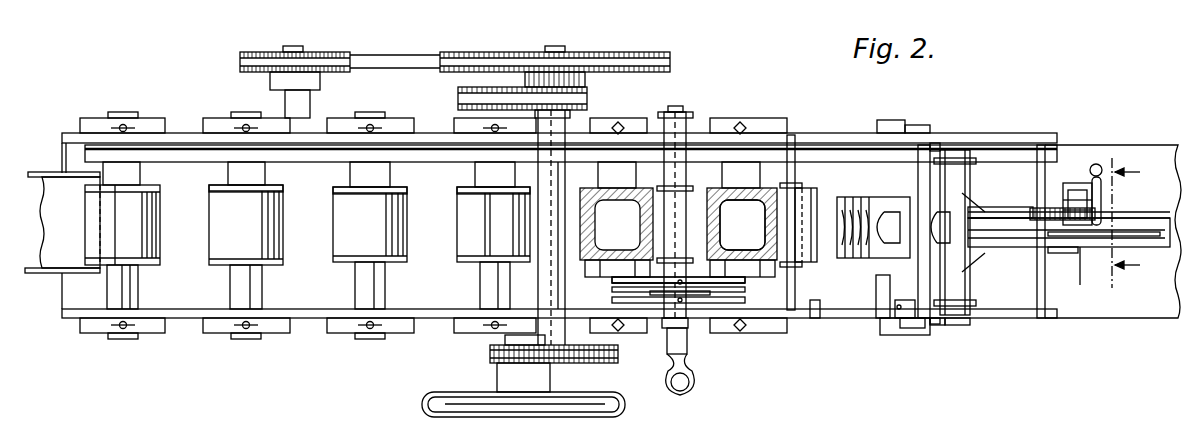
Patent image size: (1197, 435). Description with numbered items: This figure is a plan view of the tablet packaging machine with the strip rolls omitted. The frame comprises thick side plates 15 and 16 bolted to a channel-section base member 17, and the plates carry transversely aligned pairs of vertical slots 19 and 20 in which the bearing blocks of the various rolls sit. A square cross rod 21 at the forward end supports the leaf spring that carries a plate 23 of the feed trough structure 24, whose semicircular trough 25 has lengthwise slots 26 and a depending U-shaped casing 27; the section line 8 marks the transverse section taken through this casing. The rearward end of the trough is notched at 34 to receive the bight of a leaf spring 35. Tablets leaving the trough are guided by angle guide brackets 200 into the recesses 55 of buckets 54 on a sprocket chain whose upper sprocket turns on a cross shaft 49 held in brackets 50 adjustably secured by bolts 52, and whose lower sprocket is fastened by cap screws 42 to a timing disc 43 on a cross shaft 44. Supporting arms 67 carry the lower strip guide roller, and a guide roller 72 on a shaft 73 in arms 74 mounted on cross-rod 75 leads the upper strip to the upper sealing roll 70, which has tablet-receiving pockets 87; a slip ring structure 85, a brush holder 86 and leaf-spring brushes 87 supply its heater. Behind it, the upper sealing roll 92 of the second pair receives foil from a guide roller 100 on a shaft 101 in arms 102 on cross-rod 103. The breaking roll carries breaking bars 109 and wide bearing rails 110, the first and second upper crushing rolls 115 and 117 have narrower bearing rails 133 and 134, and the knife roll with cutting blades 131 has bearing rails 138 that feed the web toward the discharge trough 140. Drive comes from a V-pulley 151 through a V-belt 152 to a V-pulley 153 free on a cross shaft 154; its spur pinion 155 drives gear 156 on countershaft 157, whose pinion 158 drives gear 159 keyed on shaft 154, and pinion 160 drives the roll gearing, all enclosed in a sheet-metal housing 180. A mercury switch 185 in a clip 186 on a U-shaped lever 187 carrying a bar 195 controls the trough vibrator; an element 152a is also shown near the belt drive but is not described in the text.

The section line 8- 8 is at (1126, 221).
The side plate 15 is at (895, 290).
The side plate 16 is at (70, 135).
The base member 17 is at (1075, 308).
The vertical slots 19 is at (248, 330).
The vertical slots 20 is at (249, 120).
The cross rod 21 is at (1045, 295).
The plate 23 is at (1072, 253).
The feed trough structure 24 is at (1095, 262).
The trough 25 is at (1142, 212).
The lengthwise slots 26 is at (1142, 238).
The casing 27 is at (1000, 236).
The notch 34 is at (985, 210).
The leaf spring 35 is at (975, 195).
The cap screws 42 is at (878, 300).
The timing disc 43 is at (918, 300).
The cross shaft 44 is at (897, 318).
The cross shaft 49 is at (925, 325).
The supporting brackets 50 is at (935, 330).
The bolts 52 is at (912, 328).
The buckets 54 is at (884, 200).
The recess 55 is at (885, 322).
The supporting arms 67 is at (975, 265).
The upper sealing roll 70 is at (760, 190).
The guide roller 72 is at (820, 190).
The shaft 73 is at (775, 280).
The supporting arms 74 is at (797, 178).
The cross-rod 75 is at (822, 320).
The slip ring structure 85 is at (770, 300).
The brush holder 86 is at (695, 300).
The brushes 87 is at (733, 207).
The upper sealing roll 92 is at (585, 222).
The guide roller 100 is at (705, 195).
The shaft 101 is at (677, 186).
The supporting arms 102 is at (665, 290).
The cross-rod 103 is at (662, 126).
The breaking bars 109 is at (486, 217).
The bearing rails 110 is at (463, 190).
The upper crushing roll 115 is at (350, 237).
The upper crushing roll 117 is at (225, 217).
The cutting blades 131 is at (115, 226).
The bearing rails 133 is at (338, 188).
The bearing rails 134 is at (213, 187).
The bearing rail 138 is at (145, 268).
The trough 140 is at (52, 268).
The V-pulley 151 is at (262, 52).
The V-belt 152 is at (388, 55).
The handle 152a is at (458, 410).
The V-pulley 153 is at (650, 52).
The cross shaft 154 is at (552, 278).
The spur pinion 155 is at (590, 99).
The gear 156 is at (460, 98).
The cross countershaft 157 is at (558, 293).
The pinion 158 is at (505, 340).
The gear 159 is at (583, 363).
The pinion 160 is at (575, 160).
The housing 180 is at (97, 155).
The mercury switch 185 is at (1096, 164).
The clip 186 is at (1092, 175).
The lever 187 is at (1063, 200).
The bar 195 is at (1062, 207).
The angle guide brackets 200 is at (937, 143).